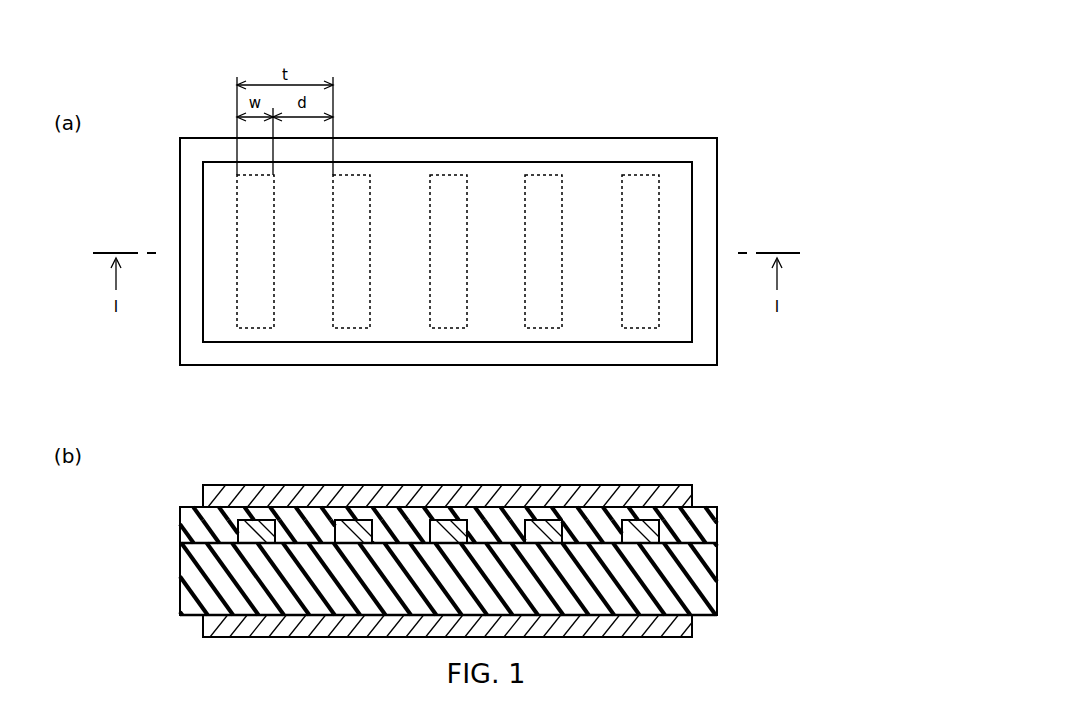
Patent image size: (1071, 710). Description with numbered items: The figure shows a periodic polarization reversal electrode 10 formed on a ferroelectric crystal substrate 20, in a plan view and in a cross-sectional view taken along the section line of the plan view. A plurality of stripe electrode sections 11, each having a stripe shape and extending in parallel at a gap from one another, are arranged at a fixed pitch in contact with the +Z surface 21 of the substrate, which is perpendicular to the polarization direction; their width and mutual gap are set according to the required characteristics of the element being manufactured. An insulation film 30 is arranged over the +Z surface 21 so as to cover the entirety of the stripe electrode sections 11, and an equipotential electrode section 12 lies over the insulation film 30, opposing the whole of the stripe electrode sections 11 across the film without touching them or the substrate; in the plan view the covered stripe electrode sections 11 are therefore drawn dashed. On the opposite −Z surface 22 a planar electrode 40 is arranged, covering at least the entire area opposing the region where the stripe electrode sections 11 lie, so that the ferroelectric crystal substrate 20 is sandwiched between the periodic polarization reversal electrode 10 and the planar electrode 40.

The periodic polarization reversal electrode 10 is at (755, 97).
The stripe electrode sections 11 is at (238, 190).
The equipotential electrode section 12 is at (592, 172).
The ferroelectric crystal substrate 20 is at (713, 583).
The +Z surface 21 is at (702, 548).
The −Z surface 22 is at (717, 610).
The insulation film 30 is at (707, 172).
The planar electrode 40 is at (695, 635).